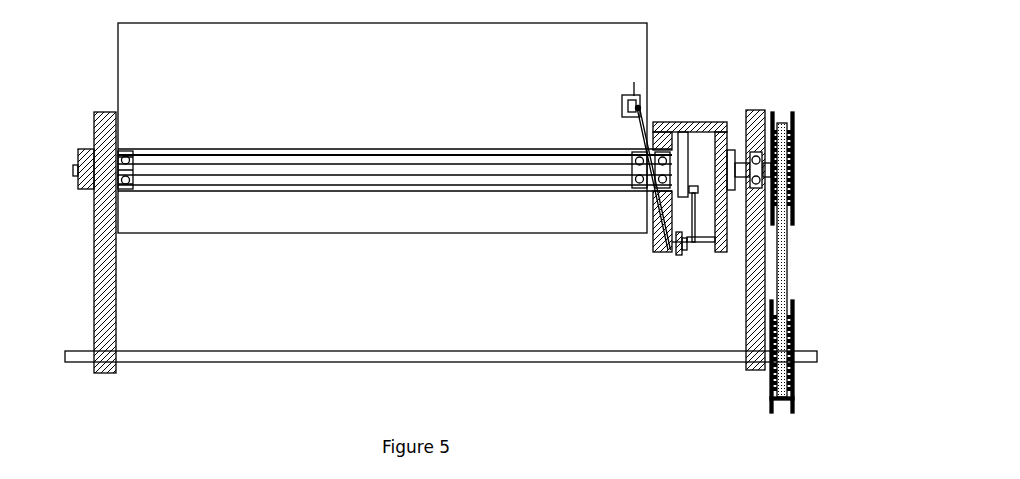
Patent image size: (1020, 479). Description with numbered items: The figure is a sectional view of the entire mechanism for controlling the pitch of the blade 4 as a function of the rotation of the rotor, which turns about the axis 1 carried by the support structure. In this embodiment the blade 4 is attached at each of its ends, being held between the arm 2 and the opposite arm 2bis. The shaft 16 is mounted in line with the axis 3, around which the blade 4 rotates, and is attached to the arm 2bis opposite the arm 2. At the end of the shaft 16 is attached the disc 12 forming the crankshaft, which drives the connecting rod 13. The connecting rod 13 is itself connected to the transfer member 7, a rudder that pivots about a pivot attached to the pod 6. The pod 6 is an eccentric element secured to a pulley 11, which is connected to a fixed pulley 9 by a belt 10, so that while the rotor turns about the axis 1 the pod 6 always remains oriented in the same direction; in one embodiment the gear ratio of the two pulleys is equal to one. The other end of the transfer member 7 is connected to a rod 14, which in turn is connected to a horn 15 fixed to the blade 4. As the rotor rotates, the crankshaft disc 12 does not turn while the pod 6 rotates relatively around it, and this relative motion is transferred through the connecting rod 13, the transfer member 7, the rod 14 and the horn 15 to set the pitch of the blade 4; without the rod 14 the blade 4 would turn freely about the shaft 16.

The axis 1 is at (232, 357).
The arm 2 is at (745, 258).
The arm 2bis is at (92, 252).
The axis 3 is at (797, 169).
The blade 4 is at (323, 218).
The pod 6 is at (653, 250).
The deflection element 7 is at (675, 253).
The fixed pulley 9 is at (791, 329).
The belt 10 is at (782, 200).
The pulley 11 is at (795, 142).
The disk 12 is at (678, 133).
The connecting rod 13 is at (693, 187).
The rod 14 is at (653, 232).
The horn 15 is at (634, 96).
The shaft 16 is at (282, 168).